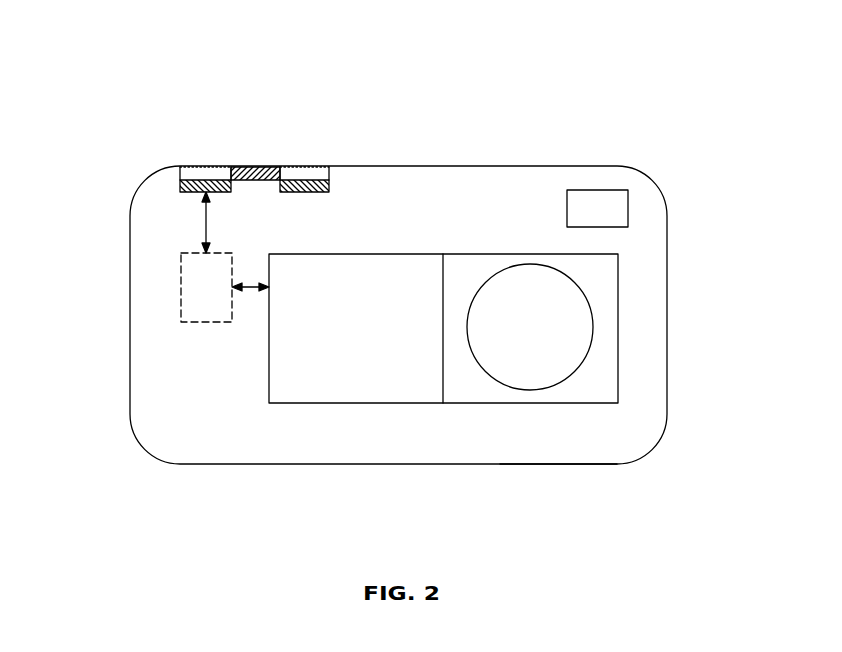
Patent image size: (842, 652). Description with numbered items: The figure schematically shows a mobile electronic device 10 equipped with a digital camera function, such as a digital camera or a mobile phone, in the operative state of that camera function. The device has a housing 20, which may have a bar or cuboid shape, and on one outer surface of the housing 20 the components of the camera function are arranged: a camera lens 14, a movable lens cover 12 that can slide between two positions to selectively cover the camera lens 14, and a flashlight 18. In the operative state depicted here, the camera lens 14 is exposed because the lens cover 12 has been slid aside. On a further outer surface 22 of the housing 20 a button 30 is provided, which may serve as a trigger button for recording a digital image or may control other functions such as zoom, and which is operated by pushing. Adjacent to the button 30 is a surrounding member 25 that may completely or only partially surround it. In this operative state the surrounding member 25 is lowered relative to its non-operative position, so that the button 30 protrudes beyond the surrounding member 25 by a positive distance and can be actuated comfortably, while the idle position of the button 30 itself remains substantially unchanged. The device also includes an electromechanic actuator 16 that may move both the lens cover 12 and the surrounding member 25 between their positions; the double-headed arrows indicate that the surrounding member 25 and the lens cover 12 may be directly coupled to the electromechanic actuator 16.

The mobile electronic device 10 is at (632, 112).
The lens cover 12 is at (269, 363).
The camera lens 14 is at (593, 321).
The electromechanic actuator 16 is at (181, 285).
The flashlight 18 is at (628, 196).
The housing 20 is at (560, 464).
The further outer surface 22 is at (432, 166).
The surrounding member 25 is at (198, 178).
The button 30 is at (253, 167).